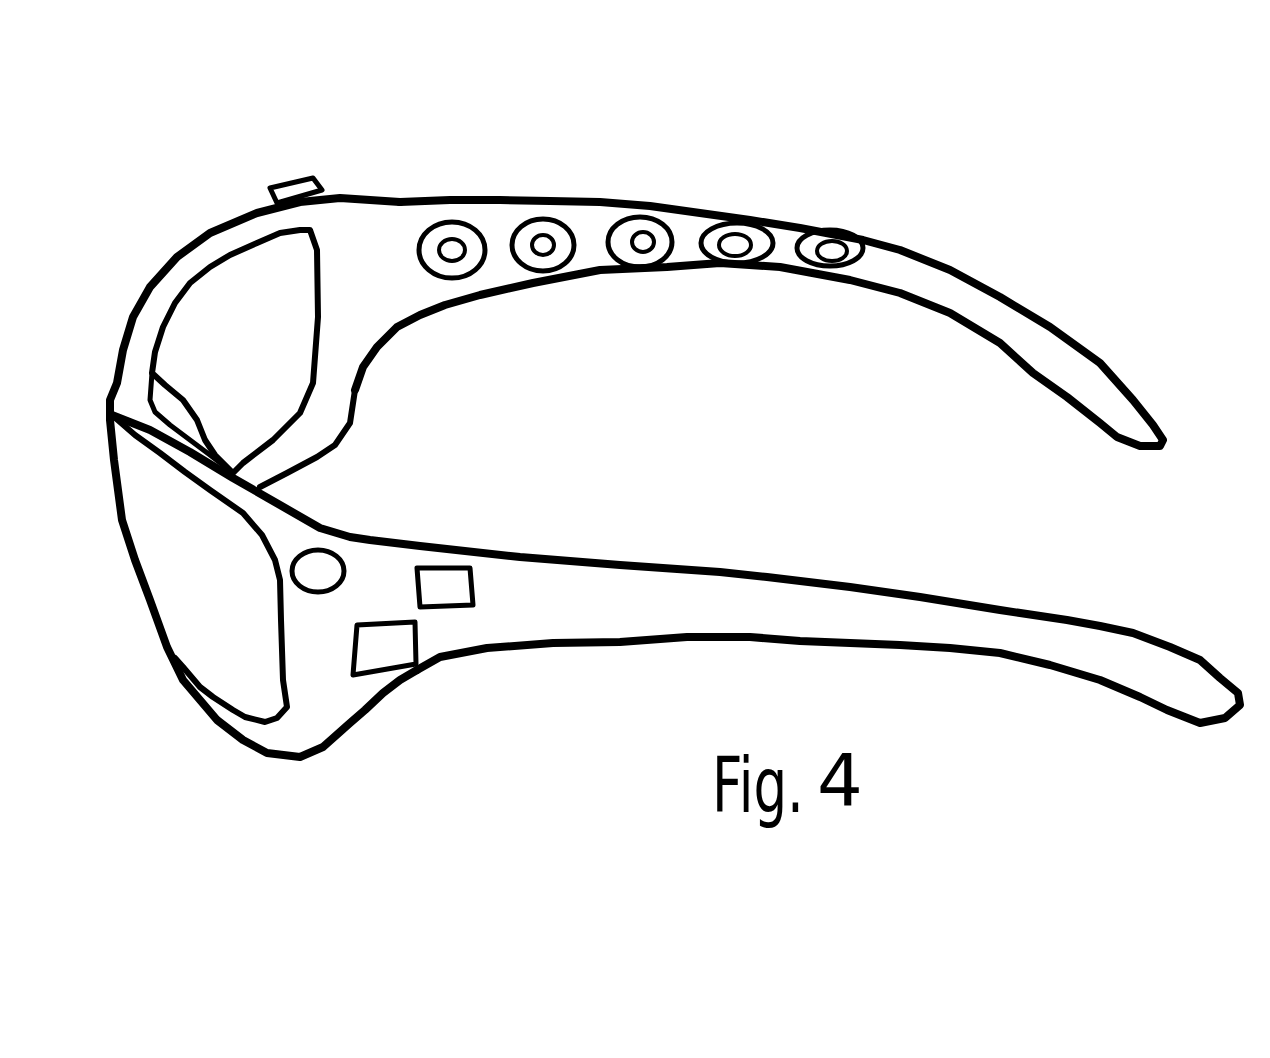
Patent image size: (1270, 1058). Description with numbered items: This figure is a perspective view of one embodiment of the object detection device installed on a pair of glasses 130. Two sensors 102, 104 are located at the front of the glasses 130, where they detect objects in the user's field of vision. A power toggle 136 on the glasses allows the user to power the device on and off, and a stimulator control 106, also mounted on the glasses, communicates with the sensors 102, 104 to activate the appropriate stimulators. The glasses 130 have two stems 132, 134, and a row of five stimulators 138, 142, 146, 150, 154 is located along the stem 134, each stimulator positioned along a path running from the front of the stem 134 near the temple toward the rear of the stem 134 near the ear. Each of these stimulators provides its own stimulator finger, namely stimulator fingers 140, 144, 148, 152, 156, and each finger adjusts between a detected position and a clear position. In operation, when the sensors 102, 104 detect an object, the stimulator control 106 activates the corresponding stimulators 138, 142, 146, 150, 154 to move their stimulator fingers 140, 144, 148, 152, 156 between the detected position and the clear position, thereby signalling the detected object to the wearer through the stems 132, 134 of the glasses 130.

The sensor 102 is at (327, 557).
The sensor 104 is at (300, 180).
The stimulator control 106 is at (393, 657).
The glasses 130 is at (267, 757).
The stem 132 is at (676, 569).
The stem 134 is at (759, 330).
The power toggle 136 is at (516, 522).
The stimulator 138 is at (433, 235).
The stimulator finger 140 is at (457, 242).
The stimulator 142 is at (538, 237).
The stimulator finger 144 is at (548, 238).
The stimulator 146 is at (648, 238).
The stimulator finger 148 is at (655, 240).
The stimulator 150 is at (797, 148).
The stimulator finger 152 is at (811, 184).
The stimulator 154 is at (860, 231).
The stimulator finger 156 is at (885, 243).